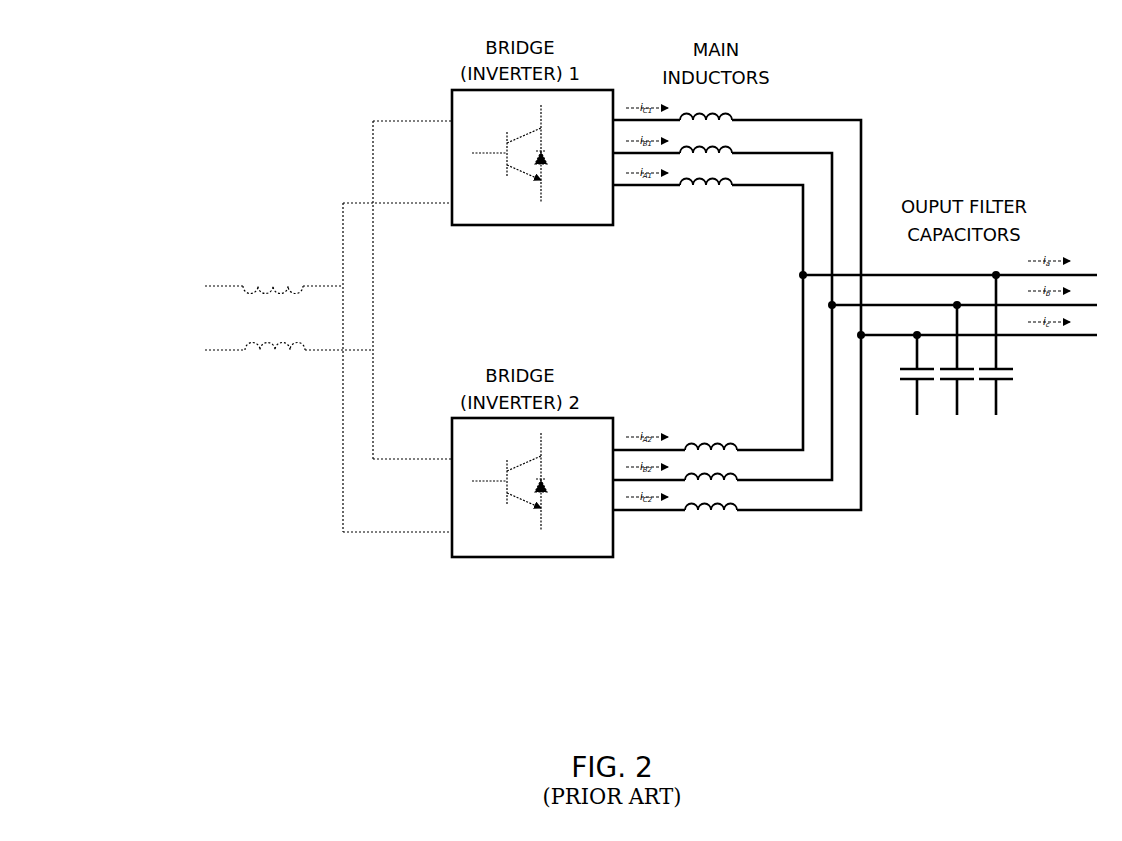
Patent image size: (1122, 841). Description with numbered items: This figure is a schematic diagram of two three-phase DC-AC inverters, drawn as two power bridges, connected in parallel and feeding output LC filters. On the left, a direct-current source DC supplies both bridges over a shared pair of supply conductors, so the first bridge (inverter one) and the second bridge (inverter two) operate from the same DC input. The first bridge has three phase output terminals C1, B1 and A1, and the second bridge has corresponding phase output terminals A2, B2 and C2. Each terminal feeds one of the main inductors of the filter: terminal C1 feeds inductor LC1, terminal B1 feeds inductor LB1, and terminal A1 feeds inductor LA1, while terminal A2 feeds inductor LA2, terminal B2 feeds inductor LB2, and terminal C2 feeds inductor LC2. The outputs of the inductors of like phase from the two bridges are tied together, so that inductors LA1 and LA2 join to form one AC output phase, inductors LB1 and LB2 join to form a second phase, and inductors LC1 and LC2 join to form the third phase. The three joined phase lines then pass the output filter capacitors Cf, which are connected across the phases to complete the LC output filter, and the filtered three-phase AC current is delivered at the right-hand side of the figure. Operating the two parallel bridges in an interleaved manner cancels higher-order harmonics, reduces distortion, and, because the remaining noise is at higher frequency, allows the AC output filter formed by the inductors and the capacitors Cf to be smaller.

The DC source DC is at (289, 318).
The bridge 1 phase C terminal C1 is at (634, 121).
The bridge 1 phase B terminal B1 is at (634, 154).
The bridge 1 phase A terminal A1 is at (634, 186).
The bridge 2 phase A terminal A2 is at (636, 451).
The bridge 2 phase B terminal B2 is at (636, 481).
The bridge 2 phase C terminal C2 is at (636, 511).
The main inductor L_C1 LC1 is at (770, 225).
The main inductor L_B1 LB1 is at (756, 226).
The main inductor L_A1 LA1 is at (741, 227).
The main inductor L_A2 LA2 is at (744, 362).
The main inductor L_B2 LB2 is at (758, 392).
The main inductor L_C2 LC2 is at (773, 422).
The output filter capacitors Cf is at (960, 343).